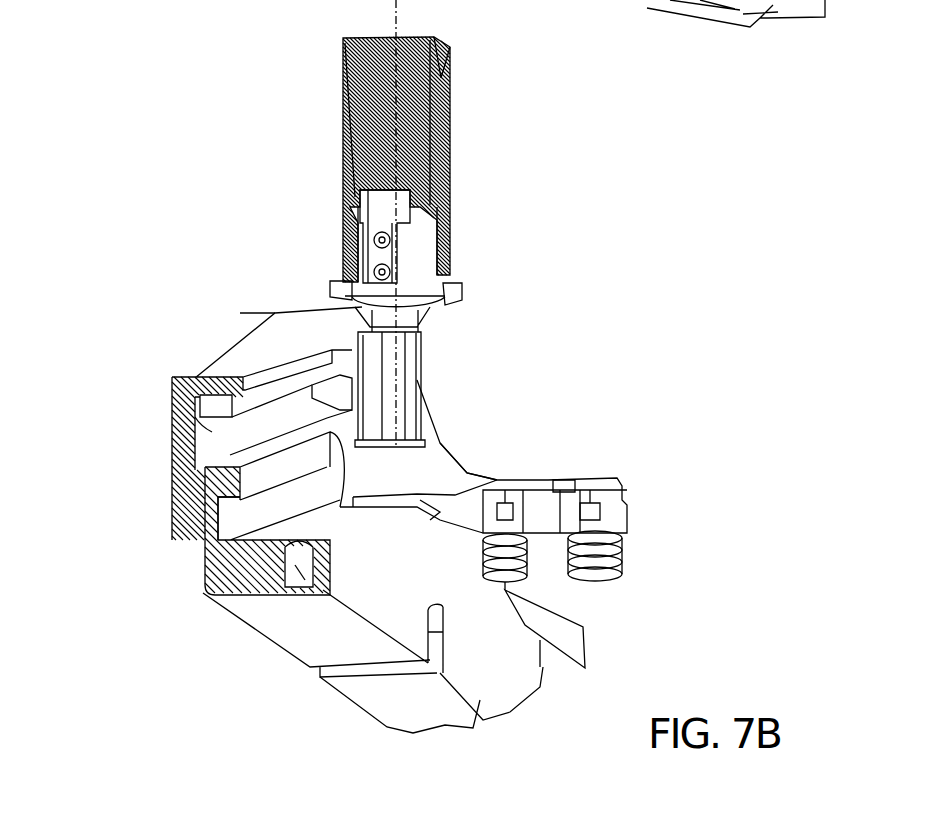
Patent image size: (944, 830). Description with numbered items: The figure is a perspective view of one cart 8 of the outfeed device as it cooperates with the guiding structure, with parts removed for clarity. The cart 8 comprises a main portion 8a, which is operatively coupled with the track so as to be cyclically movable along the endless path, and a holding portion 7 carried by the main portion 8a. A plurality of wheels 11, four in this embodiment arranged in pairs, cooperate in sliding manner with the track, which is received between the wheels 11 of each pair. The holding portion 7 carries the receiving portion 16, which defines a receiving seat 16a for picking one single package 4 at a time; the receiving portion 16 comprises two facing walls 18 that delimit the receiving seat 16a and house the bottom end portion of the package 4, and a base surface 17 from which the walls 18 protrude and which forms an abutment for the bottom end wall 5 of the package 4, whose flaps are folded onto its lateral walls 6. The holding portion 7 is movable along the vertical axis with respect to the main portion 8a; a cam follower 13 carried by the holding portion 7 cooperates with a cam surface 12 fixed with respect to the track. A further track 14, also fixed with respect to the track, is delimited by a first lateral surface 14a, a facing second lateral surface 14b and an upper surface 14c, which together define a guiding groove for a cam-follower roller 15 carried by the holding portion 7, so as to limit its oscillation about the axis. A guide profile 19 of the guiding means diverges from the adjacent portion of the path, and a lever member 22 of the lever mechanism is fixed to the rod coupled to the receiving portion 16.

The package 4 is at (415, 117).
The end wall 5 is at (371, 34).
The lateral wall 6 is at (411, 150).
The holding portion 7 is at (418, 375).
The cart 8 is at (540, 463).
The main portion 8a is at (467, 473).
The wheels 11 is at (625, 572).
The cam surface 12 is at (275, 522).
The cam follower 13 is at (355, 510).
The further track 14 is at (356, 446).
The first lateral surface 14a is at (340, 417).
The second lateral surface 14b is at (195, 427).
The upper surface 14c is at (172, 393).
The cam-follower roller 15 is at (320, 378).
The receiving portion 16 is at (328, 285).
The receiving seat 16a is at (430, 233).
The base surface 17 is at (452, 305).
The walls 18 is at (357, 234).
The guide profile 19 is at (302, 568).
The lever member 22 is at (430, 520).